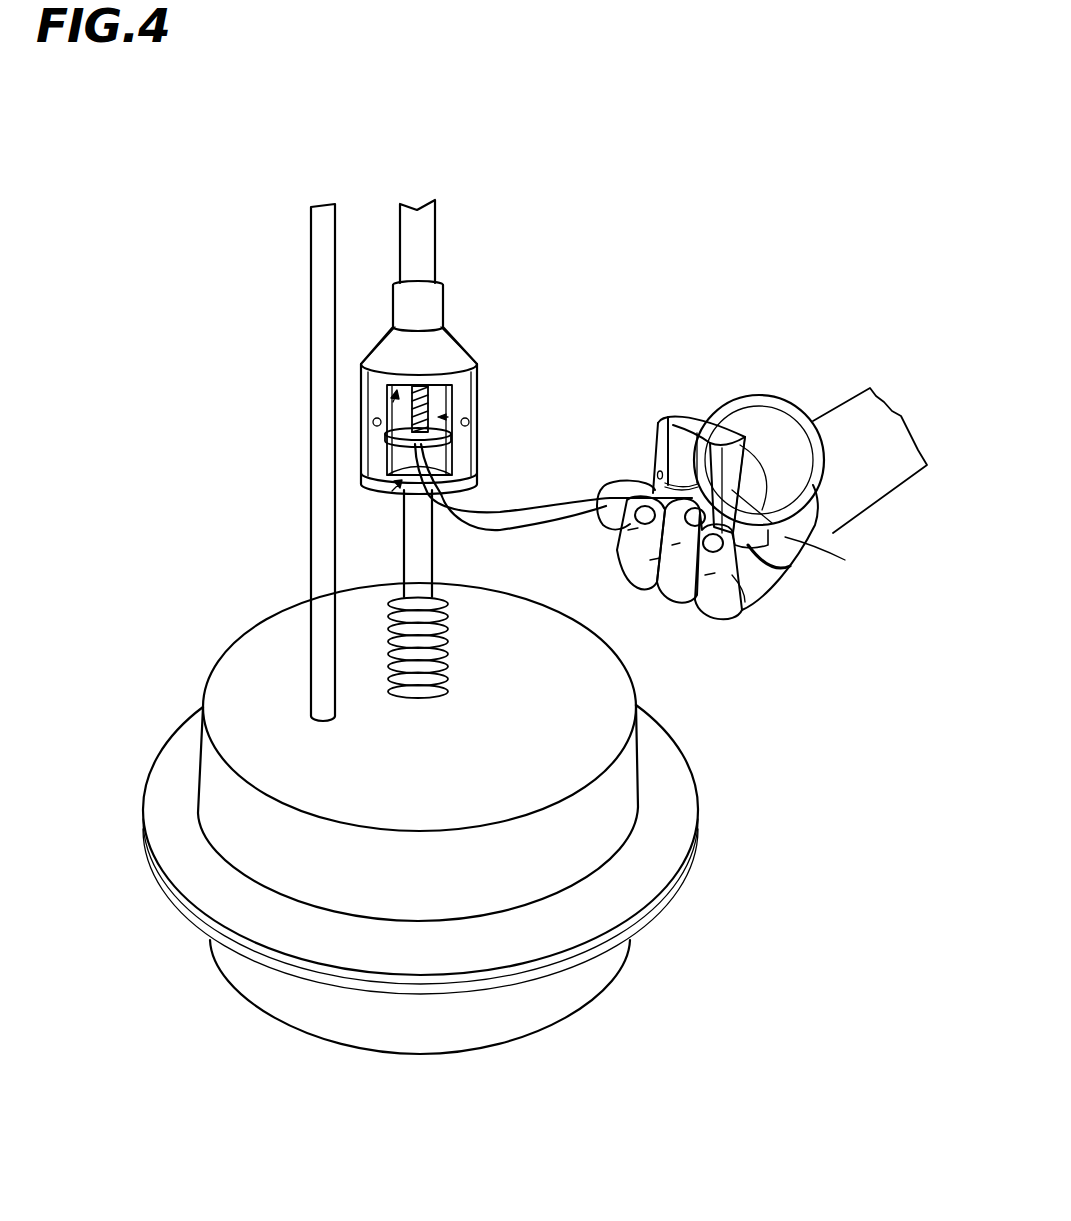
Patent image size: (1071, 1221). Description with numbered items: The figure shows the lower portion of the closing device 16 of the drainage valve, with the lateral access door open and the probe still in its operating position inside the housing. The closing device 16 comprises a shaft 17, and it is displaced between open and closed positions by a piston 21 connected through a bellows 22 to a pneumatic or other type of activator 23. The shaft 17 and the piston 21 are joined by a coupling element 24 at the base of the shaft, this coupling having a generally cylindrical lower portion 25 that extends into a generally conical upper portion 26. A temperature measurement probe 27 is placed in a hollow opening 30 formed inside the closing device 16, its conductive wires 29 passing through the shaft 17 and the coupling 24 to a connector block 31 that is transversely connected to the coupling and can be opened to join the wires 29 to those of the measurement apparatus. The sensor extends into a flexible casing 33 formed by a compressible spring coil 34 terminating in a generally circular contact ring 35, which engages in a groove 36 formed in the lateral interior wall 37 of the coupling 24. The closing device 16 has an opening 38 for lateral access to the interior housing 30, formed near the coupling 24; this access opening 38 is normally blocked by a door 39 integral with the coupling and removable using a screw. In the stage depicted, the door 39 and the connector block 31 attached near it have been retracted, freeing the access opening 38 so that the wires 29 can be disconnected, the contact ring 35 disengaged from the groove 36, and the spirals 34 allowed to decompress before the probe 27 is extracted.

The closing device 16 is at (572, 226).
The shaft 17 is at (418, 226).
The piston 21 is at (418, 541).
The bellows 22 is at (415, 641).
The activator 23 is at (730, 822).
The coupling element 24 is at (500, 350).
The cylindrical lower portion 25 is at (362, 437).
The conical upper portion 26 is at (383, 340).
The temperature measurement probe 27 is at (470, 422).
The conductive wires 29 is at (545, 530).
The hollow opening 30 is at (394, 399).
The connector block 31 is at (782, 380).
The flexible casing 33 is at (450, 417).
The compressible spring coil 34 is at (428, 386).
The contact ring 35 is at (448, 446).
The groove 36 is at (690, 445).
The lateral interior wall 37 is at (448, 460).
The access opening 38 is at (395, 487).
The door 39 is at (735, 492).